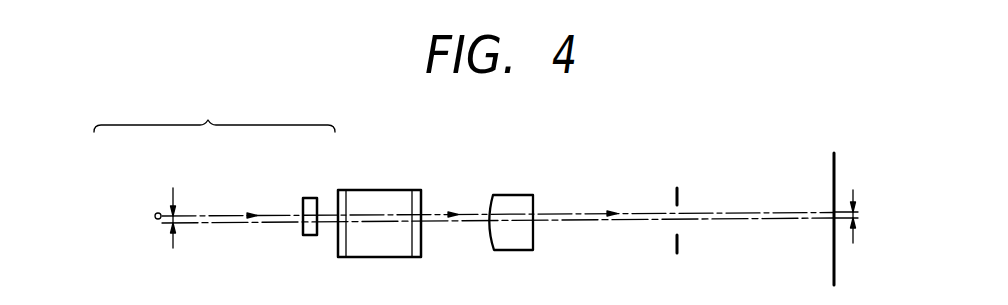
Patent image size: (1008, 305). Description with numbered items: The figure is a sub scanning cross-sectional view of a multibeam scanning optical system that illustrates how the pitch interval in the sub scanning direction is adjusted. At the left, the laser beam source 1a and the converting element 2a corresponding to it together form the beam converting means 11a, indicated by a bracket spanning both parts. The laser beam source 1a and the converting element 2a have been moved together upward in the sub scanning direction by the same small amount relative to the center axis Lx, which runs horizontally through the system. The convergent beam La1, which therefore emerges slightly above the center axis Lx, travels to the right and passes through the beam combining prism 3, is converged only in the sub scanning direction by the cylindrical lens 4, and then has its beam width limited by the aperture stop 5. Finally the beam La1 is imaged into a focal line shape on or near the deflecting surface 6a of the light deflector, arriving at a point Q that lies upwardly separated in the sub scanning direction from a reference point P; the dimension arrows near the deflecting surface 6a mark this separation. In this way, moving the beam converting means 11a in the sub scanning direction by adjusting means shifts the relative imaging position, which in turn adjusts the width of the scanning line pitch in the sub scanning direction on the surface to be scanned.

The laser beam source 1a is at (154, 216).
The converting element 2a is at (310, 197).
The beam combining prism 3 is at (377, 195).
The cylindrical lens 4 is at (512, 202).
The aperture stop 5 is at (682, 193).
The deflecting surface 6a is at (837, 270).
The beam converting means 11a is at (214, 112).
The convergent beam La1 is at (215, 215).
The center axis Lx is at (258, 225).
The reference point P is at (833, 218).
The imaging point Q is at (833, 213).